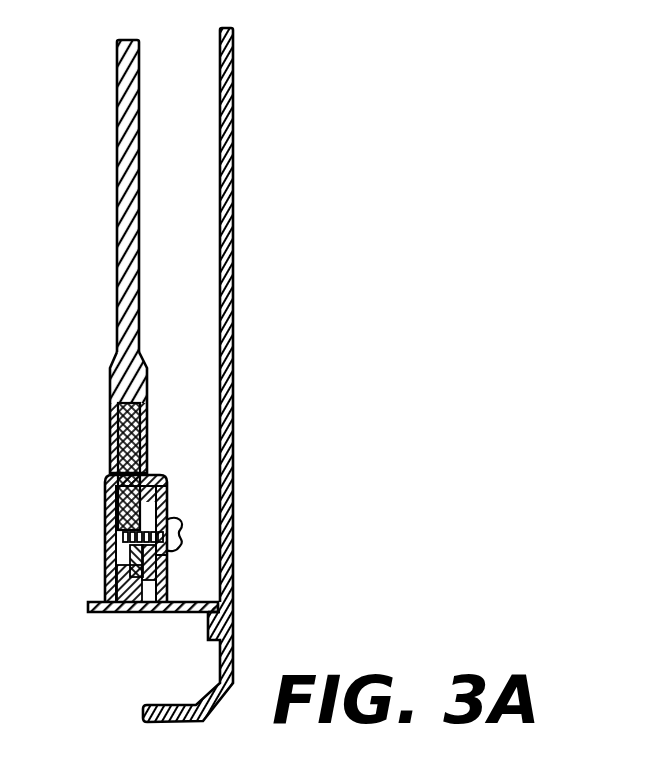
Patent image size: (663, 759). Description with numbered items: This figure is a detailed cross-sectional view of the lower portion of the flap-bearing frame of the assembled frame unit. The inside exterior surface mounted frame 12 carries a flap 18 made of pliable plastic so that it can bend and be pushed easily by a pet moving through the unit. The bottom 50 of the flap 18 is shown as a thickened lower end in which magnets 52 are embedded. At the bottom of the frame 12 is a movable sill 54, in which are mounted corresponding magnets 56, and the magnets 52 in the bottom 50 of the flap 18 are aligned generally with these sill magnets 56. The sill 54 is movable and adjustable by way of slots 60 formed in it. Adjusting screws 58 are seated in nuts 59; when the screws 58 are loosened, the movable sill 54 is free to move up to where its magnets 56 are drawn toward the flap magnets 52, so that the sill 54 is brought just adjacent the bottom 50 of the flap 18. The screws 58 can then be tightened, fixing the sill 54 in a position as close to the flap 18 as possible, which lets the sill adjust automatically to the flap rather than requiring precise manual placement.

The inside exterior surface mounted frame 12 is at (240, 283).
The flap 18 is at (130, 200).
The bottom of the flap 50 is at (137, 372).
The magnets 52 is at (148, 425).
The movable sill 54 is at (108, 511).
The magnets 56 is at (163, 492).
The adjusting screws 58 is at (168, 523).
The nuts 59 is at (125, 553).
The slots 60 is at (170, 557).